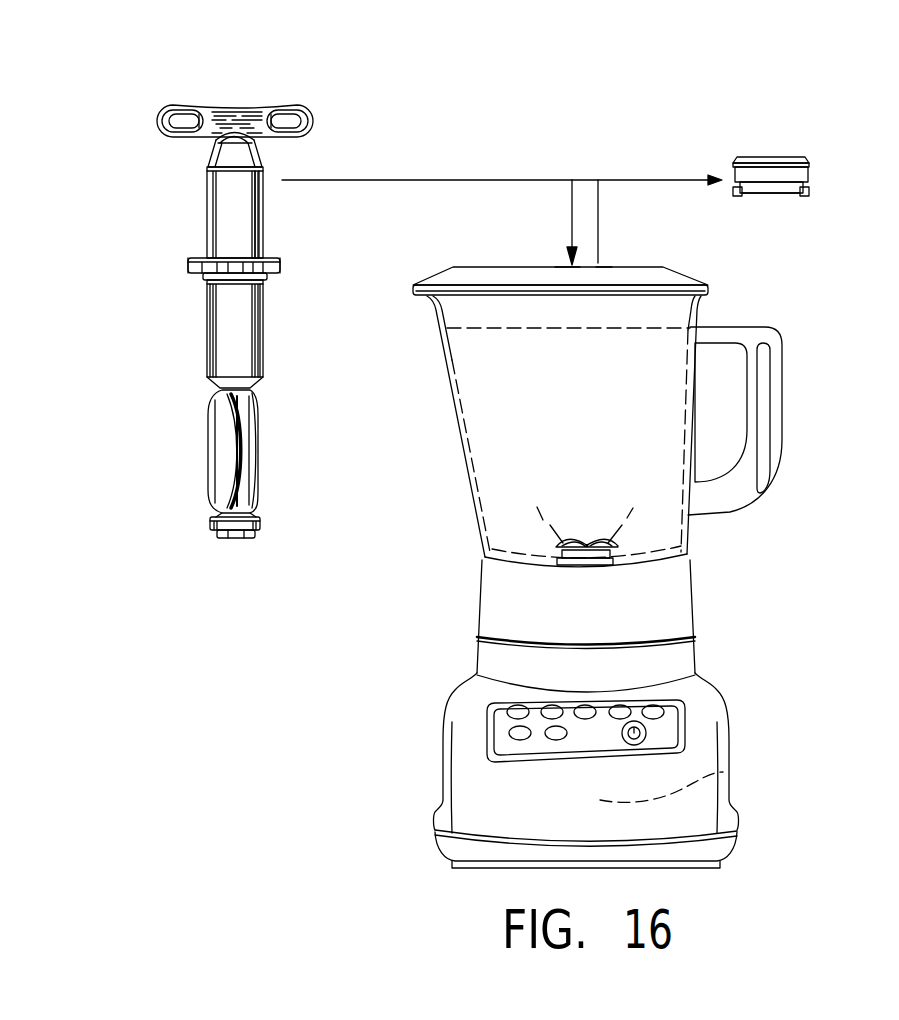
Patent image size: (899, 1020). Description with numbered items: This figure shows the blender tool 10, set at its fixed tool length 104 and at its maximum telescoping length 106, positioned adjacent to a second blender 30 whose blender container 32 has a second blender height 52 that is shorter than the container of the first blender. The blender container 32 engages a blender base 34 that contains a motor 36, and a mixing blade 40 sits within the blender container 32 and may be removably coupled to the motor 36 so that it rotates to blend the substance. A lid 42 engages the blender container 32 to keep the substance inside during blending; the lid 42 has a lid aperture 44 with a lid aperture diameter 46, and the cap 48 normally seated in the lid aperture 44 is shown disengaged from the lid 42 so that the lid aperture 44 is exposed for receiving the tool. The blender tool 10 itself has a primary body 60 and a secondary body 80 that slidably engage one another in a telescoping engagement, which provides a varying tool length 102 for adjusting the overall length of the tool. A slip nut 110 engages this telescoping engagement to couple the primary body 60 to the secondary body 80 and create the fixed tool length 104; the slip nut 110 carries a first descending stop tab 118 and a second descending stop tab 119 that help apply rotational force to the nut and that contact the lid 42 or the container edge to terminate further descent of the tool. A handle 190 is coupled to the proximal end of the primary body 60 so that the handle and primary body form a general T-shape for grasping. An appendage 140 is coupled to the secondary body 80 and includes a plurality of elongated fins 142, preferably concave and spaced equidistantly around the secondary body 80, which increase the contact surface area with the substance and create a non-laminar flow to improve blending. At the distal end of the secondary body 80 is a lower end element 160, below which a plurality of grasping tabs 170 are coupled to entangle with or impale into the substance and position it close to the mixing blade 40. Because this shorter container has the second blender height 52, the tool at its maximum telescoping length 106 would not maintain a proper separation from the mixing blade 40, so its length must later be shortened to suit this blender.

The blender tool 10 is at (233, 330).
The handle 190 is at (181, 106).
The primary body 60 is at (207, 183).
The fixed tool length 104 is at (263, 202).
The slip nut 110 is at (210, 263).
The second descending stop tab 119 is at (188, 266).
The first descending stop tab 118 is at (280, 265).
The secondary body 80 is at (207, 321).
The maximum telescoping length 106 is at (207, 340).
The varying tool length 102 is at (263, 331).
The appendage 140 is at (208, 447).
The elongated fins 142 is at (262, 450).
The end cap 160 is at (212, 522).
The grasping tabs 170 is at (223, 541).
The cap 48 is at (778, 157).
The lid 42 is at (573, 214).
The lid aperture diameter 46 is at (560, 264).
The lid aperture 44 is at (605, 266).
The blender container 32 is at (612, 431).
The second blender height 52 is at (688, 407).
The mixing blade 40 is at (538, 519).
The blender 30 is at (592, 714).
The blender base 34 is at (730, 698).
The motor 36 is at (723, 772).